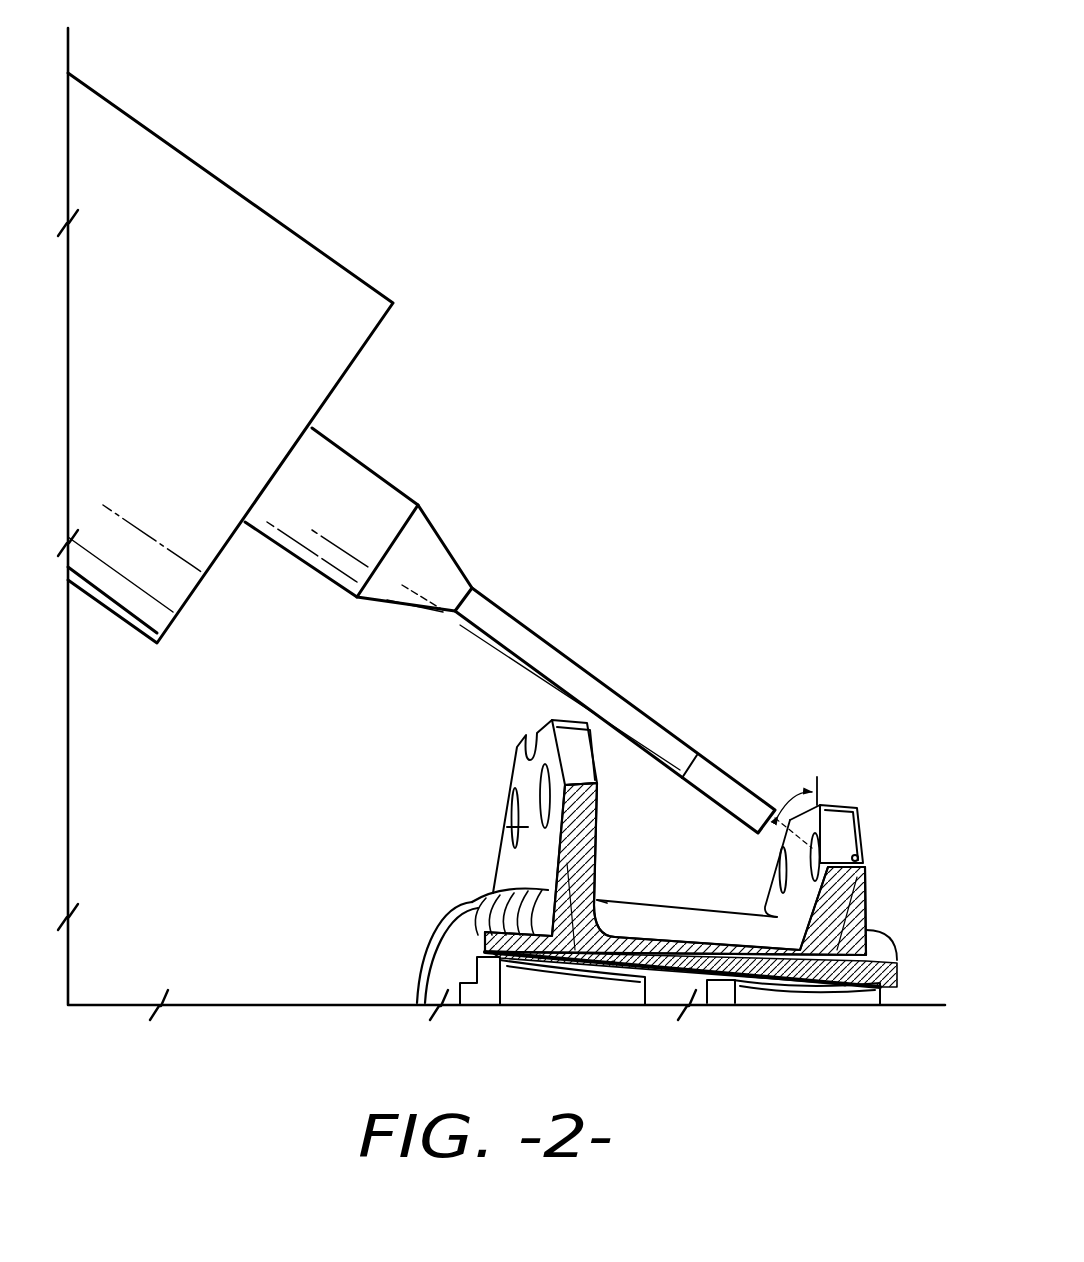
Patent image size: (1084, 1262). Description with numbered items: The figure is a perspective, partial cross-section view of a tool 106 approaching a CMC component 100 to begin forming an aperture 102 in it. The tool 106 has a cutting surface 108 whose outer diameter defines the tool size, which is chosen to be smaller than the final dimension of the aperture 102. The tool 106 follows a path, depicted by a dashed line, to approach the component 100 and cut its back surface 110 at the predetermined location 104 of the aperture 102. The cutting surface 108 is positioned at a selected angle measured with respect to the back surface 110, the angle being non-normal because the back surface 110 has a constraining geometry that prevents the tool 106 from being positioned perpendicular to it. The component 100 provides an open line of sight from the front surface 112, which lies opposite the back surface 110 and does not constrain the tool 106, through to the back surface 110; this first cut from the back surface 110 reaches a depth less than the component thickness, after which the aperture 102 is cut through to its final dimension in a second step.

The CMC component 100 is at (525, 738).
The aperture 102 is at (508, 810).
The location 104 is at (504, 829).
The tool 106 is at (212, 200).
The cutting surface 108 is at (734, 770).
The back surface 110 is at (602, 853).
The front surface 112 is at (866, 835).